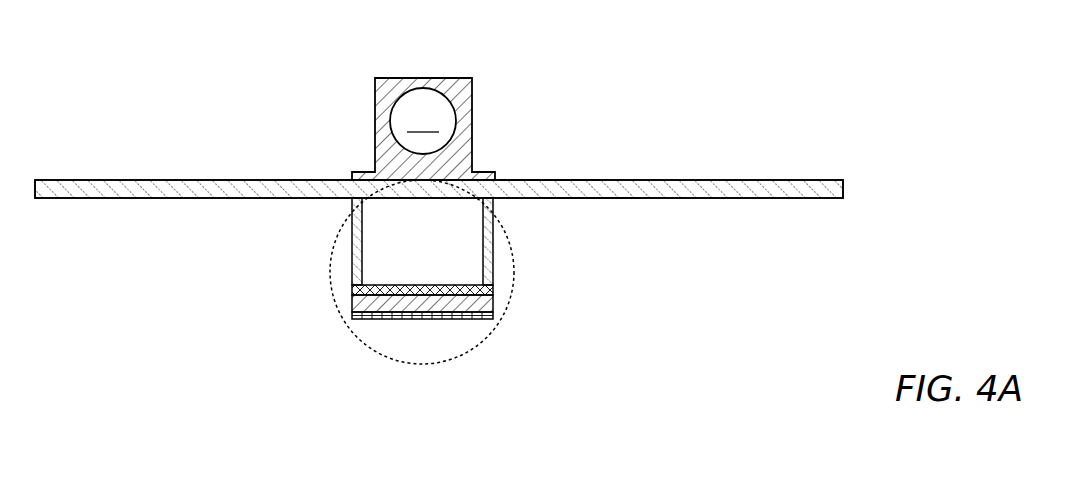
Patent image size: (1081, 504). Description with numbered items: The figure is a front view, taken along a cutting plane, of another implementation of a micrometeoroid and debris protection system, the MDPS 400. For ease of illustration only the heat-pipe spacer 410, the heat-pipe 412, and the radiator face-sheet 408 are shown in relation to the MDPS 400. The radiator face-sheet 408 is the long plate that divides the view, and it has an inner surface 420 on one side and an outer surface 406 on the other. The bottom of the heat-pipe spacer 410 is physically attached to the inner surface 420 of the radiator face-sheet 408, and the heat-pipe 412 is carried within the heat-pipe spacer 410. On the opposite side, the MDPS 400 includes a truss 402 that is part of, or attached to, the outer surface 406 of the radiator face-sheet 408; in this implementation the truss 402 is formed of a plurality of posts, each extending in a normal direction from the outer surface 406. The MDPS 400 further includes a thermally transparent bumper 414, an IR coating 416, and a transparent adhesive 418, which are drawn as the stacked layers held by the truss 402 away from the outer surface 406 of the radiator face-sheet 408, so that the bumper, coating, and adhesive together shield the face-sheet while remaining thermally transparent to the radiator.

The MDPS 400 is at (365, 347).
The truss 402 is at (483, 245).
The outer surface 406 is at (583, 199).
The radiator face-sheet 408 is at (673, 190).
The heat-pipe spacer 410 is at (469, 106).
The heat-pipe 412 is at (472, 82).
The thermally transparent bumper 414 is at (477, 303).
The IR coating 416 is at (447, 317).
The transparent adhesive 418 is at (372, 288).
The inner surface 420 is at (545, 179).